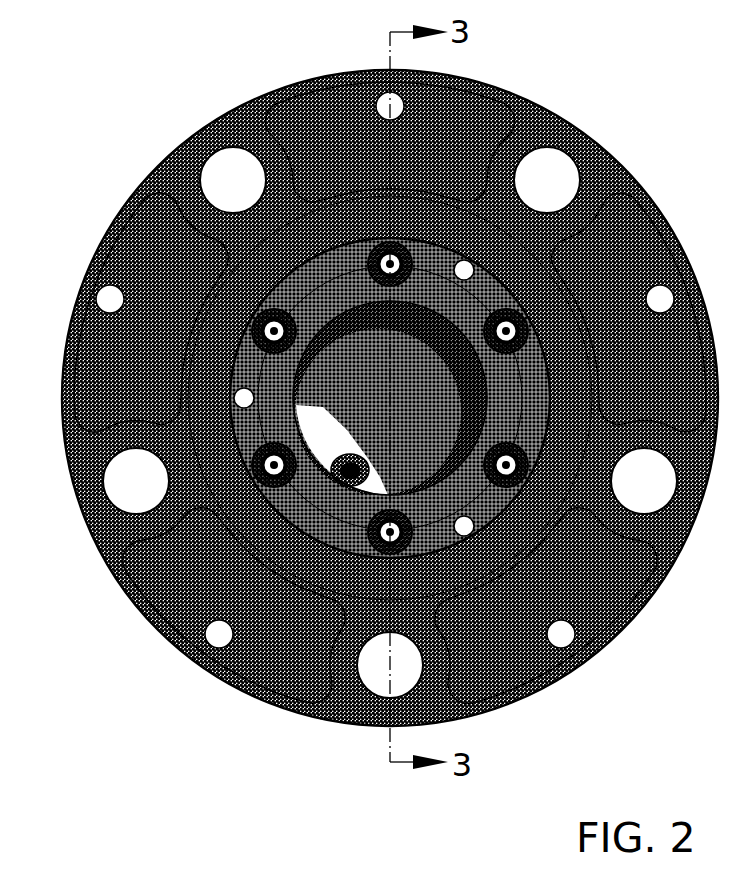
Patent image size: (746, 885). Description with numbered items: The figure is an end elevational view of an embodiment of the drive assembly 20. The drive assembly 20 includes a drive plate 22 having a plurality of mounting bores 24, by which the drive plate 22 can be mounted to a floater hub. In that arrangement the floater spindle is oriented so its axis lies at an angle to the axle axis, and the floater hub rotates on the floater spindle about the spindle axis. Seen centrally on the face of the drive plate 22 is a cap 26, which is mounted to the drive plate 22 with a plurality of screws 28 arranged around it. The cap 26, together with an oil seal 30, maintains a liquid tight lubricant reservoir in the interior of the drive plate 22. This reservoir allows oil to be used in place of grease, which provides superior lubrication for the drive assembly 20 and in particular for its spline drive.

The drive assembly 20 is at (227, 81).
The drive plate 22 is at (302, 659).
The mounting bores 24 is at (105, 510).
The cap 26 is at (297, 512).
The screws 28 is at (255, 482).
The oil seal 30 is at (352, 485).